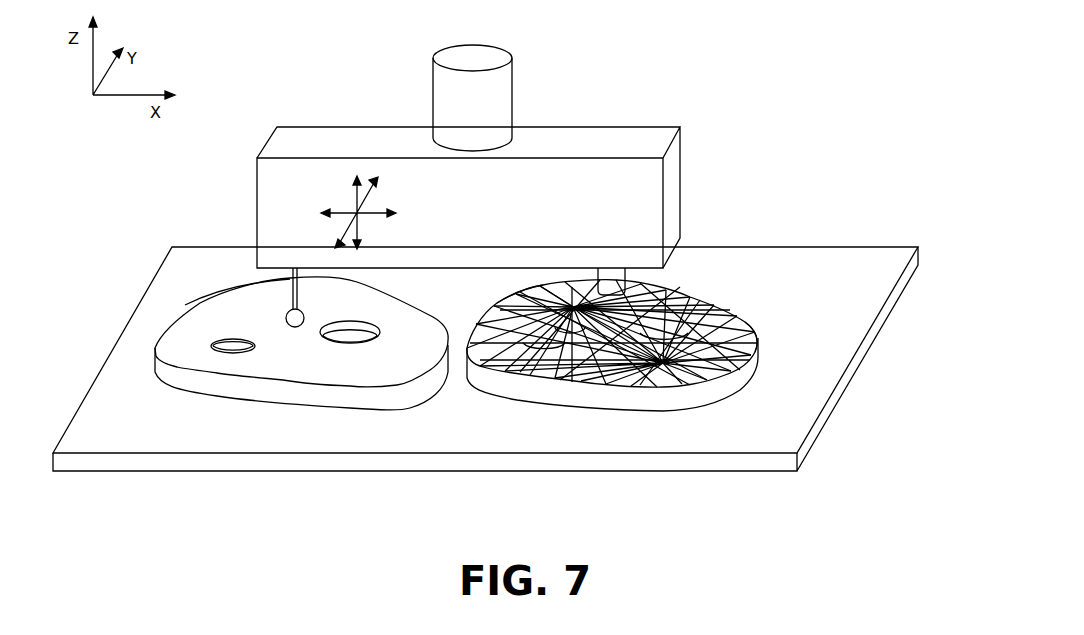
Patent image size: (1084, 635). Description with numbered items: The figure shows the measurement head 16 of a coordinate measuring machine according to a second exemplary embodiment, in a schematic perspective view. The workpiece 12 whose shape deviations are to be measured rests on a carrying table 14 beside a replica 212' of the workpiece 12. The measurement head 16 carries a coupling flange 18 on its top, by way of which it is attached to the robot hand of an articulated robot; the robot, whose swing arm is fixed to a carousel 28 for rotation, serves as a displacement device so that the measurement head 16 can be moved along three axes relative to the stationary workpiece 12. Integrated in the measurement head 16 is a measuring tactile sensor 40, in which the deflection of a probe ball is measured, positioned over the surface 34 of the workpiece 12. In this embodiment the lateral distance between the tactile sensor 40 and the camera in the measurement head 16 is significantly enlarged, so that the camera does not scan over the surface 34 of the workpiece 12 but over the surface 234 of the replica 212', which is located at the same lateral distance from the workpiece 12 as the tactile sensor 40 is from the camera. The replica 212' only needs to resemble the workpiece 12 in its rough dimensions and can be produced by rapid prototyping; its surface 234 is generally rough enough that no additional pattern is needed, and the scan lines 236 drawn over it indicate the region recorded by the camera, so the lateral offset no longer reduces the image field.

The workpiece 12 is at (156, 347).
The carrying table 14 is at (808, 437).
The measurement head 16 is at (297, 136).
The coupling flange 18 is at (507, 89).
The carousel 28 is at (628, 280).
The surface 34 is at (203, 314).
The tactile sensor 40 is at (273, 308).
The replica 212' is at (636, 309).
The surface 234 is at (758, 318).
The scan pattern lines 236 is at (514, 303).